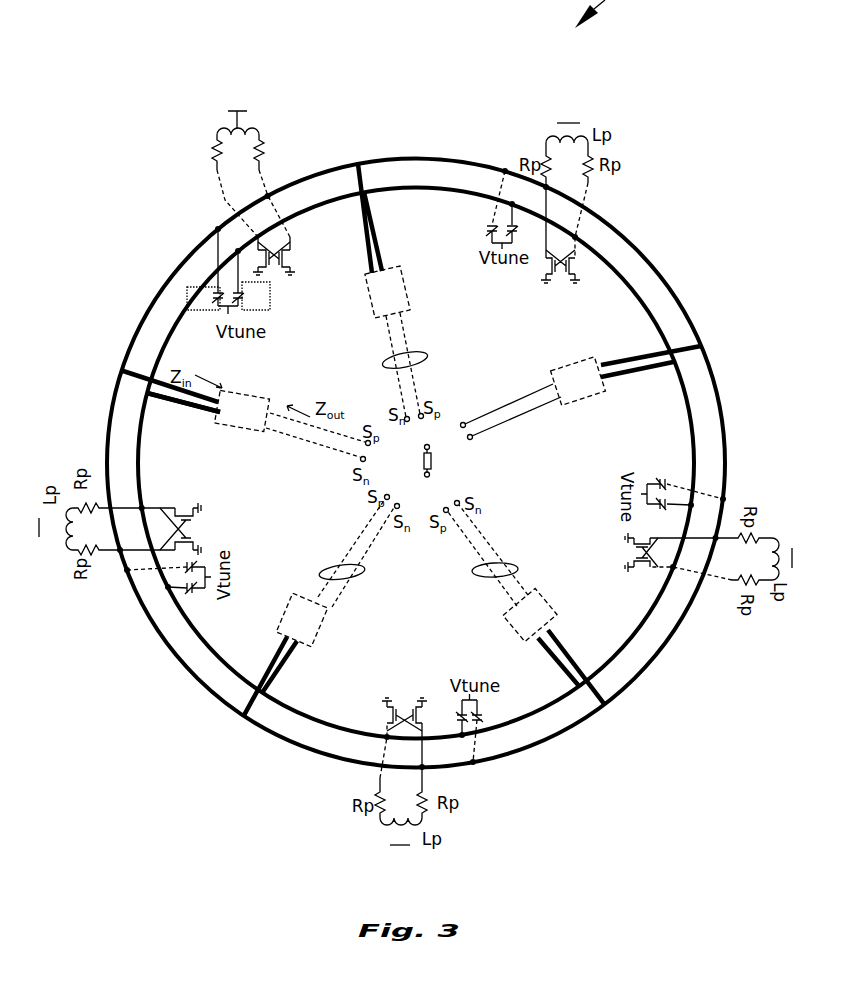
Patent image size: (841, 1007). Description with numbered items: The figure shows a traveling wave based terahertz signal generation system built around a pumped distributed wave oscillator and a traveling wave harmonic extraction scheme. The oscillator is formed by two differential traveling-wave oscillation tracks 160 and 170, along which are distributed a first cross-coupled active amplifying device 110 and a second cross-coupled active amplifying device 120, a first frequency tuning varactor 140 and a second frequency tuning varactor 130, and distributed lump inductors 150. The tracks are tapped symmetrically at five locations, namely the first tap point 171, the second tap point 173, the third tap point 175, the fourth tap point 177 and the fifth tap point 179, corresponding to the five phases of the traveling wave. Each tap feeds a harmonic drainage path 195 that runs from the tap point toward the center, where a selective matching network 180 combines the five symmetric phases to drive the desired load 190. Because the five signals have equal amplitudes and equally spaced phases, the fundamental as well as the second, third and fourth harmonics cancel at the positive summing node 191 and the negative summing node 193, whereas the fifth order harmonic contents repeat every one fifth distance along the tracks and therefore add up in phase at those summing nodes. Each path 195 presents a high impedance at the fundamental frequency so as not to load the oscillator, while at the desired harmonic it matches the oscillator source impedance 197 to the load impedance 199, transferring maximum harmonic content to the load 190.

The active amplifying device M1 110 is at (265, 277).
The active amplifying device M2 120 is at (300, 274).
The frequency tuning varactor C2 130 is at (205, 318).
The frequency tuning varactor C1 140 is at (260, 312).
The lump inductor Lp 150 is at (246, 127).
The differential traveling-wave oscillation track 160 is at (404, 159).
The differential traveling-wave oscillation track 170 is at (394, 189).
The tap point ph0 171 is at (146, 388).
The tap point ph1 173 is at (352, 197).
The tap point ph2 175 is at (677, 349).
The tap point ph3 177 is at (603, 686).
The tap point ph4 179 is at (253, 700).
The selective matching network MN 180 is at (402, 288).
The load ZL 190 is at (436, 467).
The summing node Sp 191 is at (488, 436).
The summing node Sn 193 is at (467, 408).
The harmonic drainage path 195 is at (423, 354).
The oscillator source impedance ZS 197 is at (177, 411).
The load impedance 199 is at (340, 453).